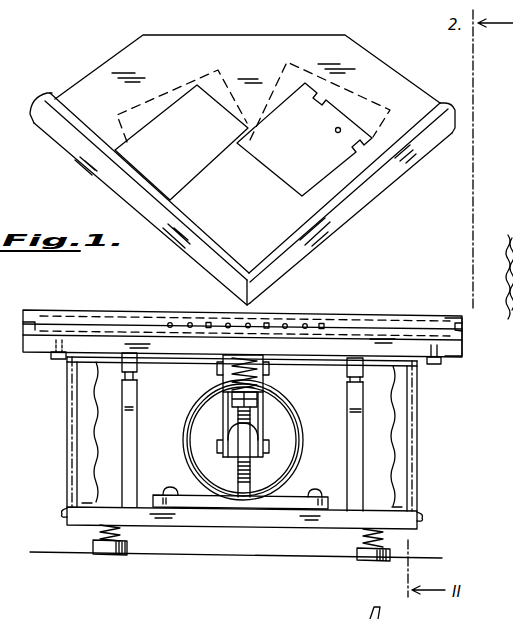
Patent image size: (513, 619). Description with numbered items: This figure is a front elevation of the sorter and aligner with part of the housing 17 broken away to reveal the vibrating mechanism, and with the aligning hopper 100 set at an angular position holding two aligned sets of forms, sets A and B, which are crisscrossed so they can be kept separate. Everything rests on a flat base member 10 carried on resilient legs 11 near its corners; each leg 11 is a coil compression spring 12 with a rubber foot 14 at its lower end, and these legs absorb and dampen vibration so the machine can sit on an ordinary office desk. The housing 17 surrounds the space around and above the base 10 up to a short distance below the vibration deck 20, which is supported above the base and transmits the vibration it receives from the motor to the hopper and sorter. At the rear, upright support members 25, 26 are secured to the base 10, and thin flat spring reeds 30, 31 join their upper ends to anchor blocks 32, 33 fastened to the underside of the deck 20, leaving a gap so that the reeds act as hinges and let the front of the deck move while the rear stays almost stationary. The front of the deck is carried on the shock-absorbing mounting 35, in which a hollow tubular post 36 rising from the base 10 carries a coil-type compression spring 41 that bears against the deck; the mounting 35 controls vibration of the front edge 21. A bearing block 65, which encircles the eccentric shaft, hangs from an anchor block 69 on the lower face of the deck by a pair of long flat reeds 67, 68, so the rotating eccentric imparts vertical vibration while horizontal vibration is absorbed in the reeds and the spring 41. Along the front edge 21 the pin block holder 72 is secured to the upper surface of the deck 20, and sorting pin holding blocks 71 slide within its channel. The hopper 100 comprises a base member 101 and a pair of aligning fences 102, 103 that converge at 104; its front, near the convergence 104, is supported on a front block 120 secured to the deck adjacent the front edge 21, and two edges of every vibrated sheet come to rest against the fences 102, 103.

The hopper 100 is at (268, 80).
The base member 101 is at (376, 82).
The aligning fence 102 is at (100, 172).
The aligning fence 103 is at (357, 208).
The convergence 104 is at (250, 287).
The slidable block 71 is at (190, 322).
The pin block holder 72 is at (105, 310).
The front block 120 is at (232, 306).
The front edge 21 is at (258, 354).
The anchor block 69 is at (232, 360).
The reed 67 is at (223, 385).
The coil-type compression spring 41 is at (262, 377).
The reed 68 is at (267, 387).
The bearing block 65 is at (258, 437).
The shock-absorbing mounting 35 is at (250, 473).
The hollow tubular post 36 is at (238, 524).
The anchor block 32 is at (137, 365).
The reed 30 is at (125, 378).
The upright support member 25 is at (138, 430).
The upright support member 26 is at (348, 425).
The anchor block 33 is at (350, 370).
The reed 31 is at (363, 377).
The housing 17 is at (413, 437).
The vibration deck 20 is at (463, 351).
The base member 10 is at (190, 518).
The coil compression spring 12 is at (383, 540).
The rubber foot 14 is at (100, 547).
The resilient leg 11 is at (110, 550).